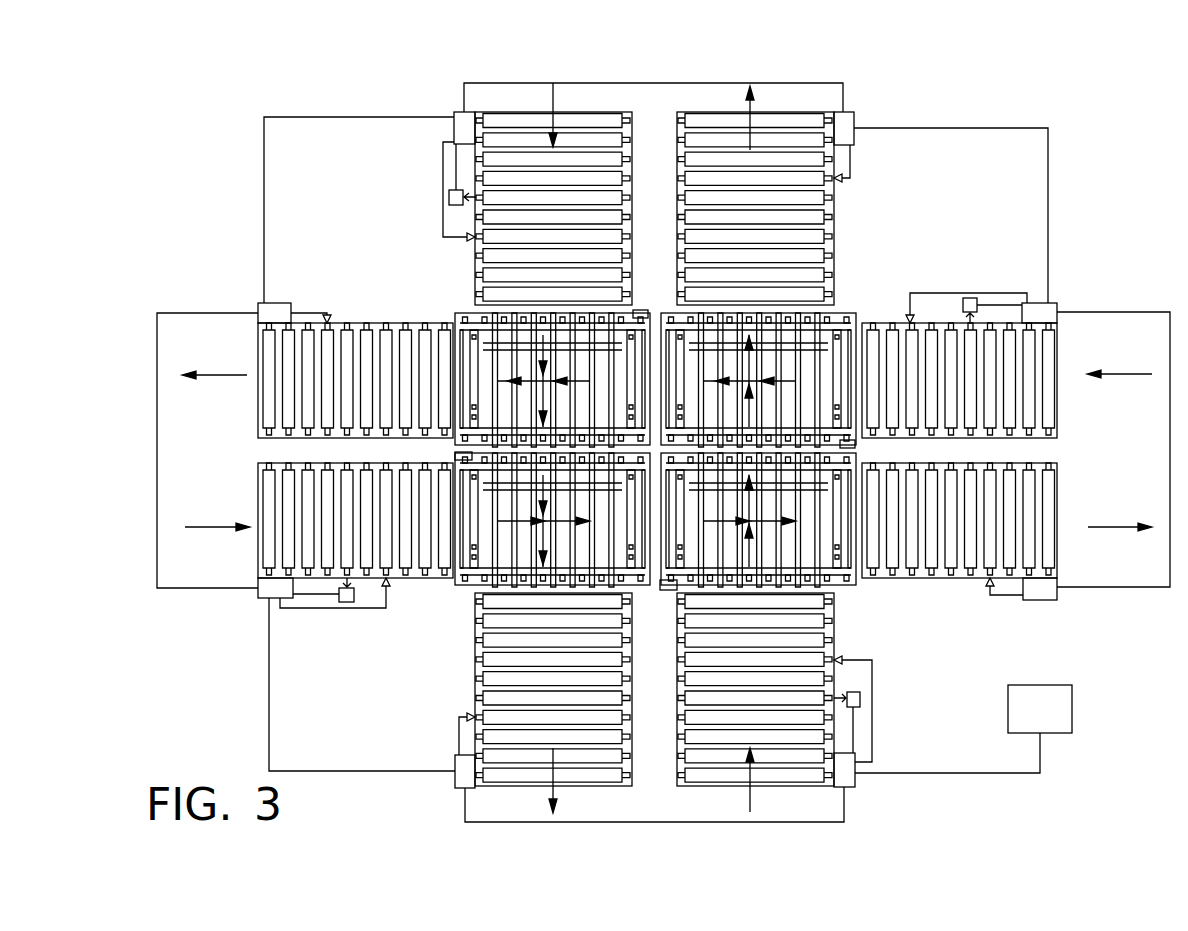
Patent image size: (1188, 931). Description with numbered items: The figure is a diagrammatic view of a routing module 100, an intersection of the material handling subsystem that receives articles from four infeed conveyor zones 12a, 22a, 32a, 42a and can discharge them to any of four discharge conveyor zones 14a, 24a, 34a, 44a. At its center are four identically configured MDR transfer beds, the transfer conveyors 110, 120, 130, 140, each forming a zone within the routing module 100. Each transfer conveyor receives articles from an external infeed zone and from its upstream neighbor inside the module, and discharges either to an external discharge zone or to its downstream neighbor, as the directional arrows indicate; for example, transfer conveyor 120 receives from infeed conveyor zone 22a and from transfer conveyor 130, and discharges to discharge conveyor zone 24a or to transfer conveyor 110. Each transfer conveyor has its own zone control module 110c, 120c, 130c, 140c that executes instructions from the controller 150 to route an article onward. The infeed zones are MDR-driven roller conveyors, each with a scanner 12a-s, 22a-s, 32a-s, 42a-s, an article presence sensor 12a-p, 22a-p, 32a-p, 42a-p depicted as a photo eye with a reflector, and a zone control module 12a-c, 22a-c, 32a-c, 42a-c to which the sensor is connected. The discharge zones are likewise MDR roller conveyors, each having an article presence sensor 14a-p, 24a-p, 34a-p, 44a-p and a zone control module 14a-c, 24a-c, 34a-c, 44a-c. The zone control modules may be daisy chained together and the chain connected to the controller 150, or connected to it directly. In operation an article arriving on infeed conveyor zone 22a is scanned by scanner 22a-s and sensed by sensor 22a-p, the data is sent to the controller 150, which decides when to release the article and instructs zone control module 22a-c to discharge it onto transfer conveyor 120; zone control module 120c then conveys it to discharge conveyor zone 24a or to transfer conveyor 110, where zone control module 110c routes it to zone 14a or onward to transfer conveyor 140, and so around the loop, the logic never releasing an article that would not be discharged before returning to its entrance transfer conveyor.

The routing module 100 is at (1085, 125).
The transfer conveyor 110 is at (856, 312).
The zone control module 110c is at (856, 444).
The transfer conveyor 120 is at (856, 588).
The zone control module 120c is at (665, 590).
The transfer conveyor 130 is at (457, 587).
The zone control module 130c is at (455, 456).
The transfer conveyor 140 is at (455, 320).
The zone control module 140c is at (640, 313).
The infeed conveyor zone 12a is at (885, 322).
The zone control module 12a-c is at (1058, 303).
The article presence sensor 12a-p is at (910, 316).
The scanner 12a-s is at (970, 297).
The discharge conveyor zone 14a is at (838, 224).
The zone control module 14a-c is at (854, 130).
The article presence sensor 14a-p is at (850, 179).
The infeed conveyor zone 22a is at (836, 608).
The zone control module 22a-c is at (856, 768).
The article presence sensor 22a-p is at (872, 660).
The scanner 22a-s is at (860, 698).
The discharge conveyor zone 24a is at (930, 578).
The zone control module 24a-c is at (1057, 592).
The article presence sensor 24a-p is at (990, 600).
The infeed conveyor zone 32a is at (405, 578).
The zone control module 32a-c is at (267, 592).
The article presence sensor 32a-p is at (386, 590).
The scanner 32a-s is at (343, 602).
The discharge conveyor zone 34a is at (475, 686).
The zone control module 34a-c is at (455, 780).
The article presence sensor 34a-p is at (459, 718).
The infeed conveyor zone 42a is at (472, 267).
The zone control module 42a-c is at (454, 136).
The article presence sensor 42a-p is at (443, 237).
The scanner 42a-s is at (449, 197).
The discharge conveyor zone 44a is at (380, 323).
The zone control module 44a-c is at (260, 305).
The article presence sensor 44a-p is at (327, 316).
The controller 150 is at (1040, 709).